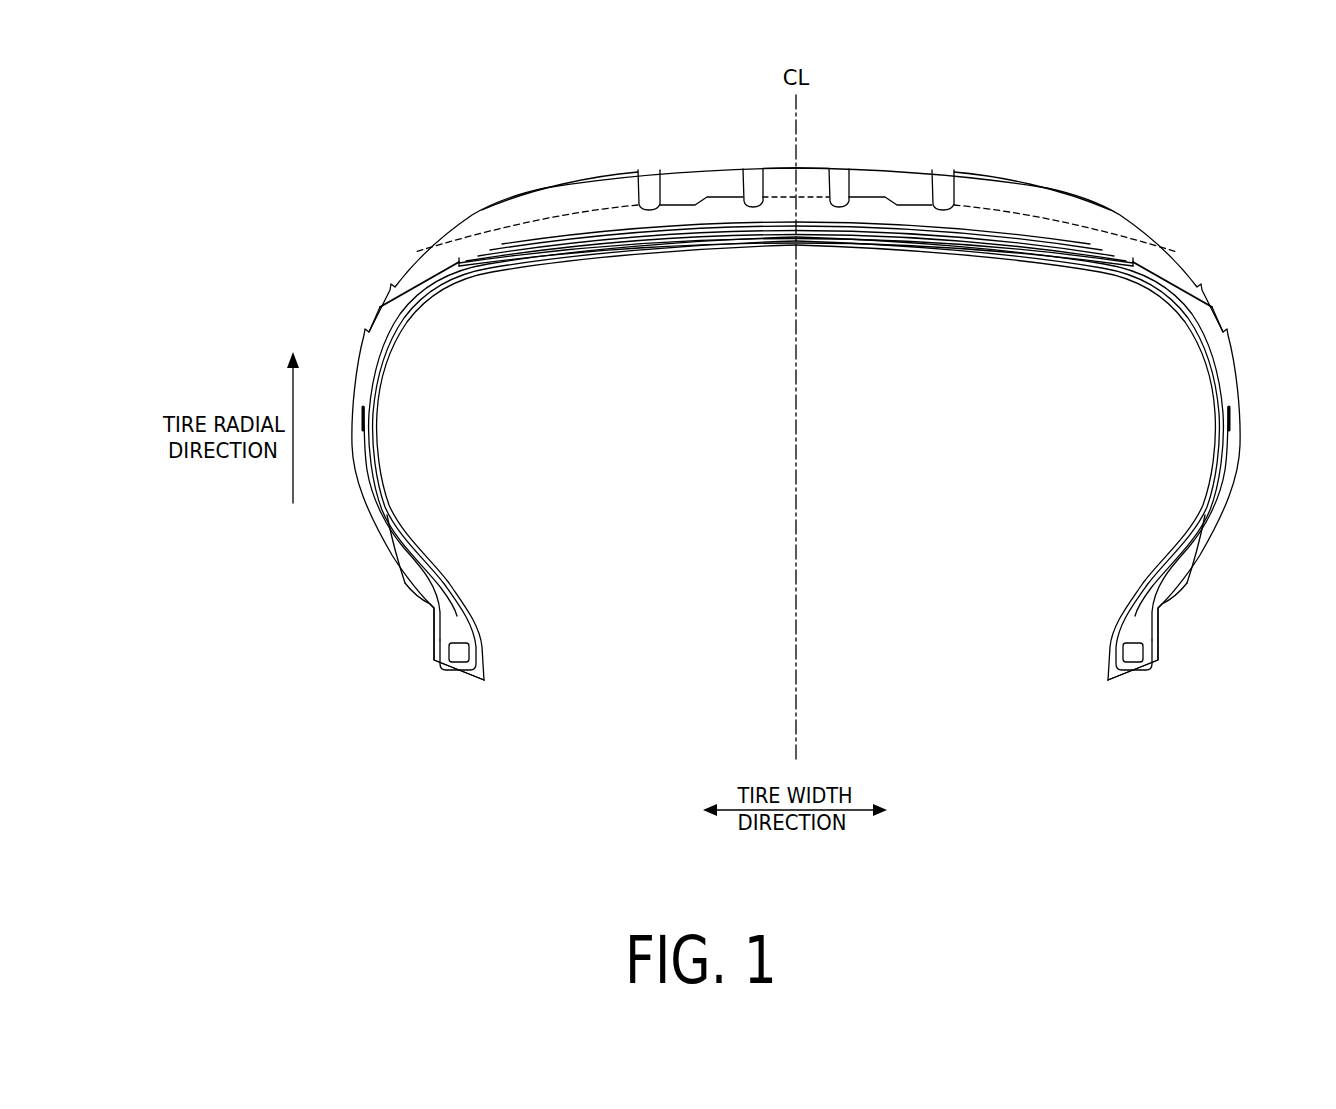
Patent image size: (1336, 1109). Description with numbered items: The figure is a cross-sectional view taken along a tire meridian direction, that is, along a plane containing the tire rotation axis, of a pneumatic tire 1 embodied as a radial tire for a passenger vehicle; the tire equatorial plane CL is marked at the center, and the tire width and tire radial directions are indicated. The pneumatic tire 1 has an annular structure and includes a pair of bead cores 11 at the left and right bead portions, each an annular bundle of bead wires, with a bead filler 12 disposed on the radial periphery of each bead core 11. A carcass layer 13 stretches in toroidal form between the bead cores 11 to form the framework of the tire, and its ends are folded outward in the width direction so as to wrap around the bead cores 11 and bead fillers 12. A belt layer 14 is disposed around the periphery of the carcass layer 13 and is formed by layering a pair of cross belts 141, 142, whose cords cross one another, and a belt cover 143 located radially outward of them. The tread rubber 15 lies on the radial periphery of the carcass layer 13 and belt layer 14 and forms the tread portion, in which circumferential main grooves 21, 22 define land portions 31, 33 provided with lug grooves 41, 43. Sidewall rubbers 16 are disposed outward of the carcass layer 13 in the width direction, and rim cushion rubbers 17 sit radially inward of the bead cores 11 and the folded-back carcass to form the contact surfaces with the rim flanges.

The pneumatic tire 1 is at (1080, 127).
The bead core 11 is at (1134, 652).
The bead filler 12 is at (1140, 622).
The carcass layer 13 is at (1143, 285).
The belt layer 14 is at (796, 294).
The cross belt 141 is at (965, 325).
The cross belt 142 is at (1042, 249).
The belt cover 143 is at (990, 240).
The tread rubber 15 is at (1152, 255).
The sidewall rubber 16 is at (1212, 328).
The rim cushion rubber 17 is at (1173, 592).
The circumferential main groove 21 is at (752, 184).
The circumferential main groove 22 is at (649, 187).
The land portion 31 is at (805, 170).
The land portion 33 is at (598, 175).
The lug groove 41 is at (786, 197).
The lug groove 43 is at (493, 222).